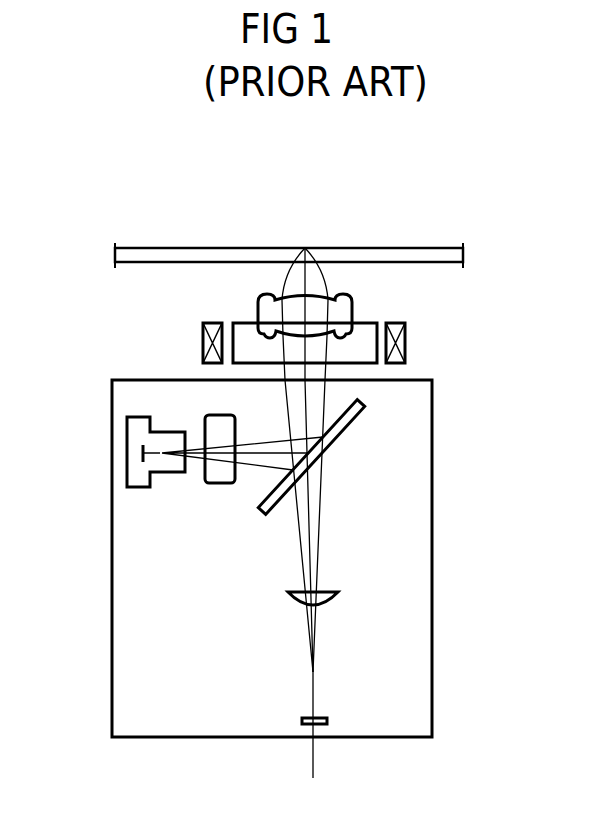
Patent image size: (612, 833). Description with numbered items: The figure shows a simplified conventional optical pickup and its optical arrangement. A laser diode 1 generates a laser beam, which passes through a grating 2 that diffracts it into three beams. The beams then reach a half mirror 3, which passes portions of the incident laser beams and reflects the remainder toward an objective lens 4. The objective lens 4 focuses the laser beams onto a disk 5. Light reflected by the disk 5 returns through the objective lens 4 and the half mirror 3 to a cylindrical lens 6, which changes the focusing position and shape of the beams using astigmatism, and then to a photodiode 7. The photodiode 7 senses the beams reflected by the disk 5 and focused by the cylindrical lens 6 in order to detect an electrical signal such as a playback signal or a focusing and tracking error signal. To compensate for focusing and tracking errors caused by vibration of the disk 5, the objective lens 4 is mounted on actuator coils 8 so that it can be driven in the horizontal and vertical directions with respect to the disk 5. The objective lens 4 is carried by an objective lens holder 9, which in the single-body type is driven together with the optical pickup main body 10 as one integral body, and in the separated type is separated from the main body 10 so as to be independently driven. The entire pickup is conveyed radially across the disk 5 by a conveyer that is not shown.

The laser diode 1 is at (133, 449).
The grating 2 is at (217, 423).
The half mirror 3 is at (343, 425).
The objective lens 4 is at (258, 303).
The disk 5 is at (207, 247).
The cylindrical lens 6 is at (338, 596).
The photodiode 7 is at (314, 762).
The actuator coils 8 is at (405, 344).
The objective lens holder 9 is at (367, 328).
The optical pickup main body 10 is at (110, 627).